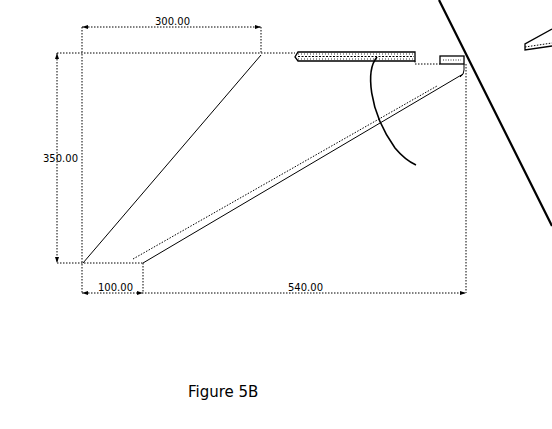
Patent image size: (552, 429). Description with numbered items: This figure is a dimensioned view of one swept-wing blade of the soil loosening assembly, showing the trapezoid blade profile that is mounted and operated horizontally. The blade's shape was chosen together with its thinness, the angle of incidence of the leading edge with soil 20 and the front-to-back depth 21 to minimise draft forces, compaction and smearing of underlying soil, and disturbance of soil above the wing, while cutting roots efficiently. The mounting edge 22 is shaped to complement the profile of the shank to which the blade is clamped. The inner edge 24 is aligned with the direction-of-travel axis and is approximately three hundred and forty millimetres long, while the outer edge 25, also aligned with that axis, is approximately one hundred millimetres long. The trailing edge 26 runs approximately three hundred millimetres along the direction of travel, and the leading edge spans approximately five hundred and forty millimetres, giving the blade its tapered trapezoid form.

The angle of incidence of the leading edge with soil 20 is at (364, 98).
The front-to-back depth 21 is at (275, 97).
The mounting edge 22 is at (426, 74).
The inner edge 24 is at (390, 72).
The outer edge 25 is at (107, 276).
The trailing edge 26 is at (158, 64).